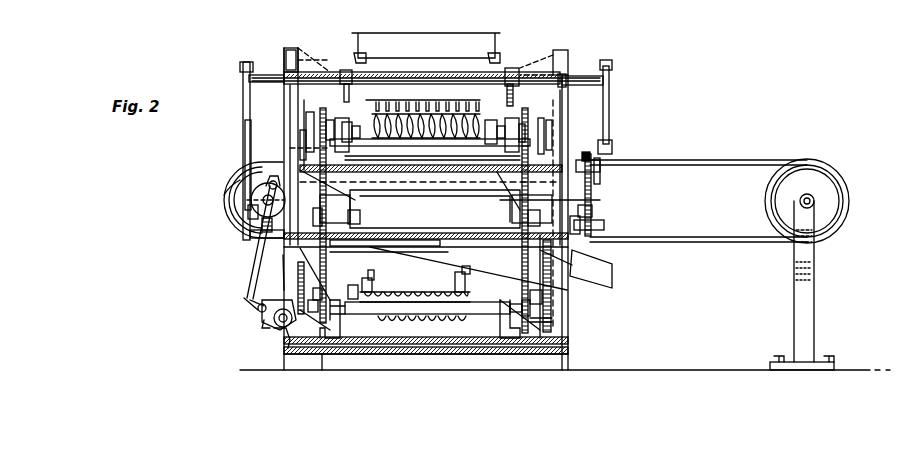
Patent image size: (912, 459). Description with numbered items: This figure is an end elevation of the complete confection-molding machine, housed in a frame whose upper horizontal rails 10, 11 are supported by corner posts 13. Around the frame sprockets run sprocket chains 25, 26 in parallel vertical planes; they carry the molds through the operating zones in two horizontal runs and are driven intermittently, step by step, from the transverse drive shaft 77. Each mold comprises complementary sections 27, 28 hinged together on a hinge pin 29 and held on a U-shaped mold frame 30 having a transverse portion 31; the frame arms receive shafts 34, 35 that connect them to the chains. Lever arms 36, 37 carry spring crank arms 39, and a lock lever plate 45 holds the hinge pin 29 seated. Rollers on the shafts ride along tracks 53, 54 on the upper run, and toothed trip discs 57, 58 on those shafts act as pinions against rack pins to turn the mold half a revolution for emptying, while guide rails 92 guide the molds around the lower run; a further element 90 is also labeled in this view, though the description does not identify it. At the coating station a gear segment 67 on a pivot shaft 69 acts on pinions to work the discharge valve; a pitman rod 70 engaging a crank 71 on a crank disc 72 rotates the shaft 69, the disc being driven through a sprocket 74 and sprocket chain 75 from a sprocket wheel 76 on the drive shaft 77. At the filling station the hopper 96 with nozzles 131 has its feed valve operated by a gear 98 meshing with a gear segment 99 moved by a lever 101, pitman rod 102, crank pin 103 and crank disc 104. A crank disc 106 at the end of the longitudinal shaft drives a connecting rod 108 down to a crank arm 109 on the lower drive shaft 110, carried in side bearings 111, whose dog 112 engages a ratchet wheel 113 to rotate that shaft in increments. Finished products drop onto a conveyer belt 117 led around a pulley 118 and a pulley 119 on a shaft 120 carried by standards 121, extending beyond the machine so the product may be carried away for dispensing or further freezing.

The upper horizontal rail 10 is at (566, 56).
The upper horizontal rail 11 is at (284, 60).
The corner post 13 is at (296, 108).
The sprocket chain 25 is at (600, 200).
The sprocket chain 26 is at (374, 243).
The mold section 27 is at (400, 146).
The mold section 28 is at (380, 316).
The hinge pin 29 is at (420, 292).
The mold frame 30 is at (382, 112).
The transverse portion 31 is at (468, 310).
The shaft 34 is at (330, 120).
The shaft 35 is at (522, 130).
The lever arm 36 is at (345, 124).
The lever arm 37 is at (500, 120).
The spring crank arm 39 is at (345, 148).
The lock lever plate 45 is at (376, 290).
The track 53 is at (300, 136).
The track 54 is at (545, 140).
The trip disc 57 is at (306, 118).
The trip disc 58 is at (552, 126).
The gear segment 67 is at (510, 100).
The pivot shaft 69 is at (578, 80).
The pitman rod 70 is at (610, 96).
The crank 71 is at (612, 146).
The crank disc 72 is at (600, 170).
The sprocket 74 is at (586, 154).
The sprocket chain 75 is at (594, 192).
The sprocket wheel 76 is at (600, 214).
The transverse drive shaft 77 is at (604, 226).
The rod 90 is at (410, 258).
The guide rail 92 is at (322, 265).
The hopper 96 is at (418, 40).
The gear 98 is at (345, 72).
The gear segment 99 is at (345, 90).
The lever 101 is at (243, 68).
The pitman rod 102 is at (243, 137).
The crank pin 103 is at (255, 212).
The crank disc 104 is at (250, 237).
The crank disc 106 is at (262, 200).
The connecting rod 108 is at (250, 262).
The crank arm 109 is at (258, 310).
The lower drive shaft 110 is at (283, 328).
The side bearing 111 is at (274, 271).
The dog 112 is at (282, 300).
The ratchet wheel 113 is at (262, 322).
The conveyer belt 117 is at (240, 192).
The pulley 118 is at (242, 184).
The pulley 119 is at (832, 176).
The shaft 120 is at (814, 202).
The standard 121 is at (812, 292).
The nozzle 131 is at (380, 108).